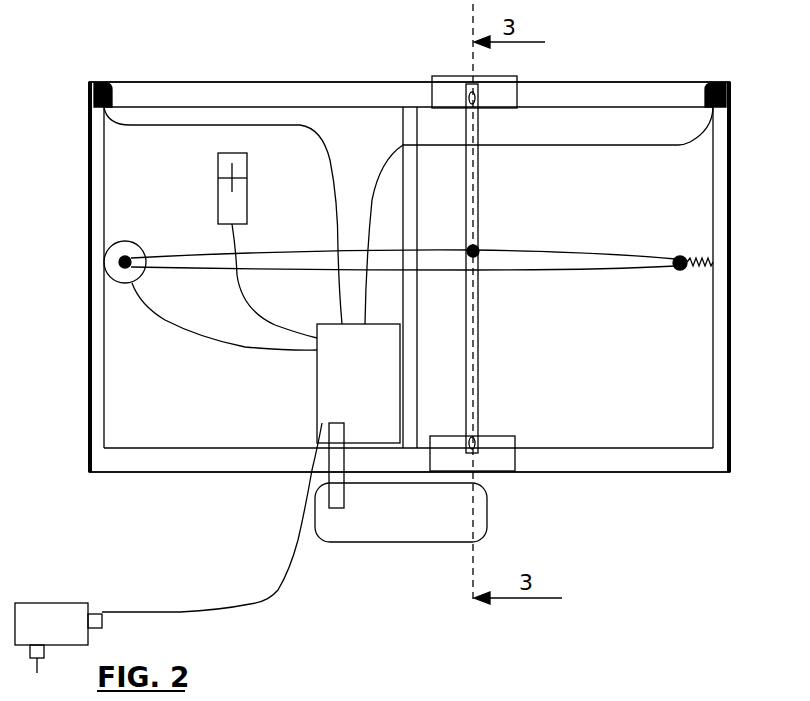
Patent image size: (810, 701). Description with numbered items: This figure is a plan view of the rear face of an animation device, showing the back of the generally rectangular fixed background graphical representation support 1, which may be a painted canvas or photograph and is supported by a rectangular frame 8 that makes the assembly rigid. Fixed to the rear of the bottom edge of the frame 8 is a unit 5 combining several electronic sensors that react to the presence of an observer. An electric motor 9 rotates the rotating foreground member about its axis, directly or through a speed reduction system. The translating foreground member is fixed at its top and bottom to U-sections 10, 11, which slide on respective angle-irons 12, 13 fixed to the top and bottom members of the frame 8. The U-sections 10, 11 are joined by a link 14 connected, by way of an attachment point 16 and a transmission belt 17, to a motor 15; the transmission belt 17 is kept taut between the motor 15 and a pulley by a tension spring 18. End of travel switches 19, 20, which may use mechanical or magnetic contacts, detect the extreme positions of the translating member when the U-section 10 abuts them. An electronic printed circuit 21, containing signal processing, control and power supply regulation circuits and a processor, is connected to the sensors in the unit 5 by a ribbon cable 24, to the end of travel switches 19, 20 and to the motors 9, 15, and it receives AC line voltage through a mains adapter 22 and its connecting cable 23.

The background graphical representation support 1 is at (175, 155).
The unit 5 is at (456, 517).
The frame 8 is at (104, 163).
The electric motor 9 is at (242, 163).
The U-section 10 is at (497, 90).
The U-section 11 is at (492, 460).
The angle-iron 12 is at (320, 93).
The angle-iron 13 is at (710, 458).
The link 14 is at (478, 380).
The motor 15 is at (123, 273).
The attachment point 16 is at (478, 249).
The transmission belt 17 is at (203, 270).
The tension spring 18 is at (686, 268).
The end of travel switch 19 is at (730, 93).
The end of travel switch 20 is at (92, 90).
The electronic printed circuit 21 is at (345, 380).
The mains adapter 22 is at (72, 608).
The connecting cable 23 is at (250, 603).
The ribbon cable 24 is at (340, 496).